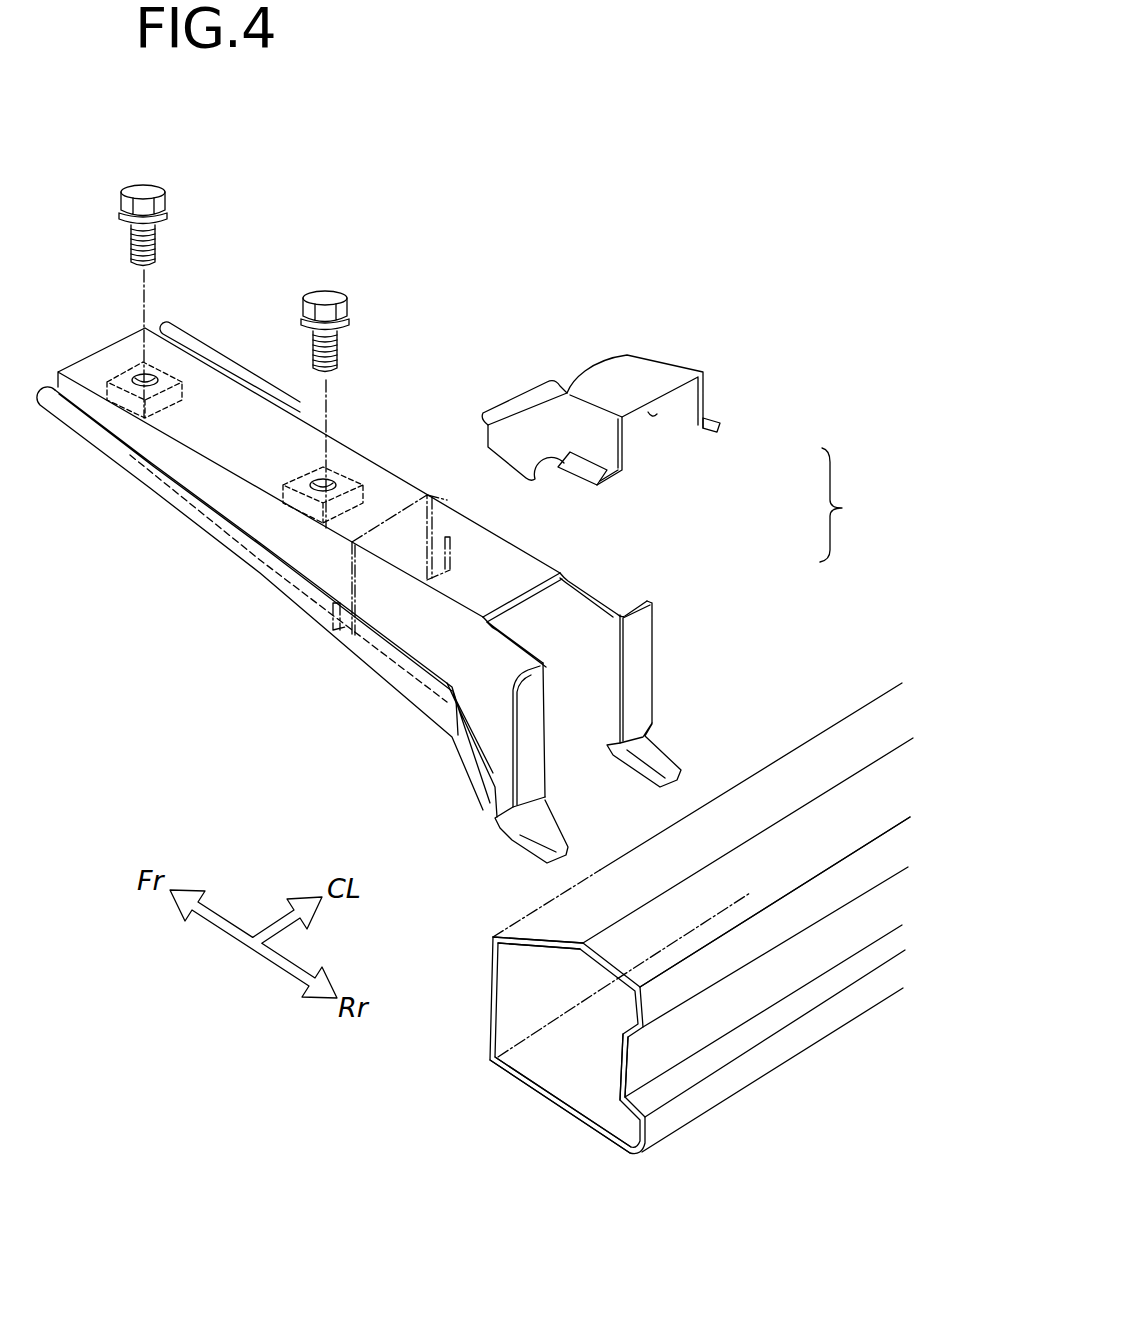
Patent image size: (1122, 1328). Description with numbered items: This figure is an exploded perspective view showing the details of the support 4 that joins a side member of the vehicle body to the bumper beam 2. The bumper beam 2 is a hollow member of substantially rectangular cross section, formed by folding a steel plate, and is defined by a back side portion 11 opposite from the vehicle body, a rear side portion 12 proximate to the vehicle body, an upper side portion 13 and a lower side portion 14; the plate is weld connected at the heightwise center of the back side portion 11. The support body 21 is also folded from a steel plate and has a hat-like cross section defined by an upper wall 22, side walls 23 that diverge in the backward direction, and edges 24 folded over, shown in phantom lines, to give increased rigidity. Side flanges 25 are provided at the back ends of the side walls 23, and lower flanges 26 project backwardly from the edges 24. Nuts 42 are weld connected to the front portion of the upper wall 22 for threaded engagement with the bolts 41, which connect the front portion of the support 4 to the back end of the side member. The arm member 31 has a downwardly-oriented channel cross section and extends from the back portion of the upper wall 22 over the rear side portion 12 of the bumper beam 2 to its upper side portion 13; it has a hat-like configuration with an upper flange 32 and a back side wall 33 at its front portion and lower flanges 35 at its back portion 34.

The bumper beam 2 is at (644, 949).
The support 4 is at (453, 586).
The back side portion 11 is at (664, 1040).
The rear side portion 12 is at (487, 1004).
The upper side portion 13 is at (688, 910).
The lower side portion 14 is at (550, 1113).
The support body 21 is at (418, 597).
The upper wall 22 is at (387, 512).
The side walls 23 is at (443, 517).
The edges 24 is at (437, 578).
The side flanges 25 is at (632, 698).
The lower flanges 26 is at (599, 784).
The arm member 31 is at (628, 412).
The upper flange 32 is at (525, 385).
The back side wall 33 is at (517, 458).
The back portion 34 is at (700, 395).
The lower flanges 35 is at (710, 414).
The bolts 41 is at (145, 192).
The nuts 42 is at (162, 406).